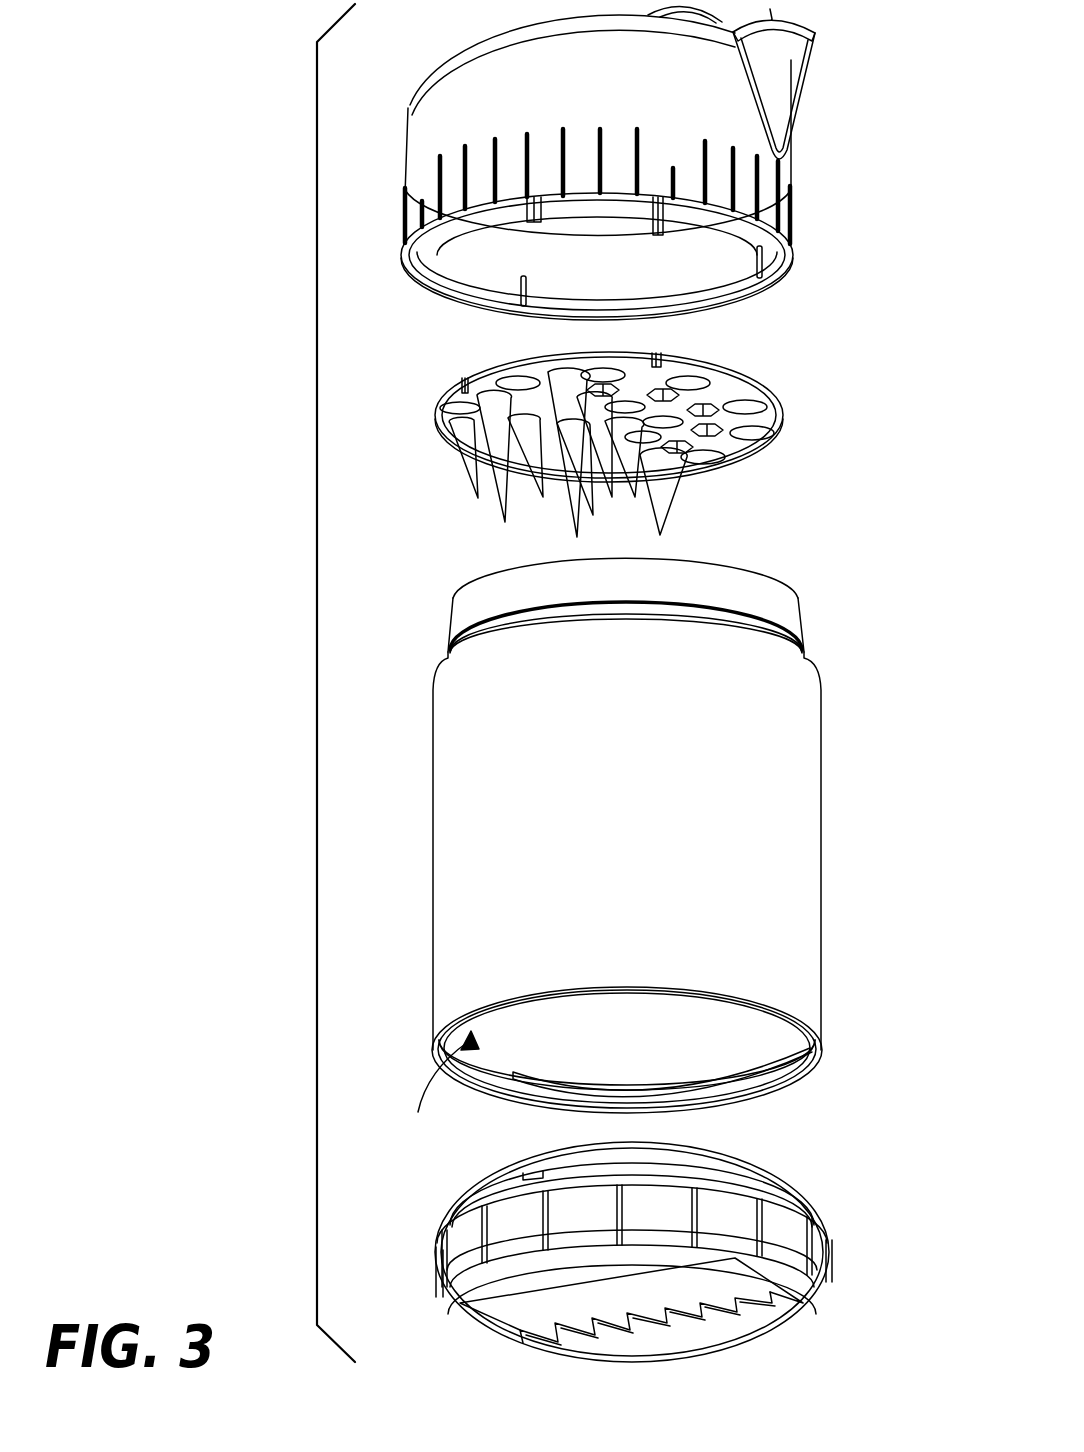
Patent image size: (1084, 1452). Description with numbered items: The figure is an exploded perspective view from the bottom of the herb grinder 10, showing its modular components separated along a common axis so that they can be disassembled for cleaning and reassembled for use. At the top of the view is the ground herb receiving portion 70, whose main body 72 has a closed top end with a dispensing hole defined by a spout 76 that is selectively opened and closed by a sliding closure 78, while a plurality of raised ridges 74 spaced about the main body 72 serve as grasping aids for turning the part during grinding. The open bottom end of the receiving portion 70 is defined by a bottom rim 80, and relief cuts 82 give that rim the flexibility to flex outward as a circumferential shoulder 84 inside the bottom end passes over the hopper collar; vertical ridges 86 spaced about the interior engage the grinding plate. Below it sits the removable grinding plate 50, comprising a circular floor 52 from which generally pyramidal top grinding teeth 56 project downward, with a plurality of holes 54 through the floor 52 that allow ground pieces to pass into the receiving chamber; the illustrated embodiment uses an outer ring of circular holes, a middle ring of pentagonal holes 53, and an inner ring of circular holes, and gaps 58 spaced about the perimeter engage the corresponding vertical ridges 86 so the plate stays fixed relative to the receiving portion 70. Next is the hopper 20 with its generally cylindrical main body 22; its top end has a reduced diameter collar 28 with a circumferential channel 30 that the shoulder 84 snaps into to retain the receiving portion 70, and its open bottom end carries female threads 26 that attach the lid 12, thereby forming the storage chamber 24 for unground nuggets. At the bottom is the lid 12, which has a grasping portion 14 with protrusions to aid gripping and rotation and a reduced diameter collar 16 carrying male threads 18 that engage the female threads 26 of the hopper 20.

The herb grinder 10 is at (316, 710).
The lid 12 is at (862, 1200).
The grasping portion 14 is at (815, 1278).
The reduced diameter collar 16 is at (505, 1170).
The male threads 18 is at (466, 1208).
The hopper 20 is at (862, 683).
The main body 22 is at (814, 824).
The storage chamber 24 is at (442, 1088).
The female threads 26 is at (776, 1073).
The reduced diameter collar 28 is at (795, 618).
The circumferential channel 30 is at (450, 648).
The removable grinding plate 50 is at (862, 418).
The circular floor 52 is at (445, 420).
The hexagonal openings 53 is at (773, 421).
The holes 54 is at (705, 460).
The top grinding teeth 56 is at (470, 474).
The gaps 58 is at (660, 353).
The ground herb receiving portion 70 is at (862, 169).
The main body 72 is at (410, 140).
The raised ridges 74 is at (432, 185).
The spout 76 is at (793, 72).
The sliding closure 78 is at (808, 21).
The bottom rim 80 is at (478, 282).
The relief cuts 82 is at (523, 282).
The circumferential shoulder 84 is at (528, 218).
The vertical ridges 86 is at (660, 234).